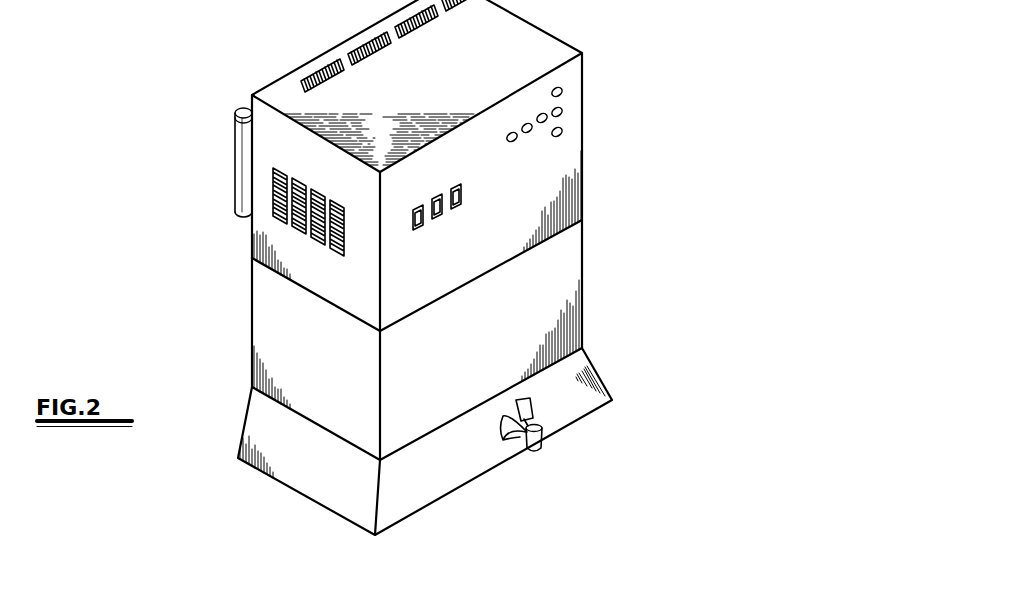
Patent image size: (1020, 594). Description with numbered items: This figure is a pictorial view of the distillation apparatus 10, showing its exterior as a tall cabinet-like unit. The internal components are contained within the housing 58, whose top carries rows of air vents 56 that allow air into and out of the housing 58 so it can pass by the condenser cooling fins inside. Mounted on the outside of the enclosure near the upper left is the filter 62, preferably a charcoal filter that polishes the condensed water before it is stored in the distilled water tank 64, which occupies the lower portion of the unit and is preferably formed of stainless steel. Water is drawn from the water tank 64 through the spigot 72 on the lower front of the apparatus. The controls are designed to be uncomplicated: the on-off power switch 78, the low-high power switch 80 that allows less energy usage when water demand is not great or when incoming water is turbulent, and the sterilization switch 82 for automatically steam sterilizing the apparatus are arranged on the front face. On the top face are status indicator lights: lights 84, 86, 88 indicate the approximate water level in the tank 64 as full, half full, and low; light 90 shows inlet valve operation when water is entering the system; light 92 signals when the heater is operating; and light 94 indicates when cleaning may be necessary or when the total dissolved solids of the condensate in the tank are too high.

The distillation apparatus 10 is at (222, 266).
The air vents 56 is at (307, 86).
The housing 58 is at (498, 27).
The filter 62 is at (240, 184).
The distilled water tank 64 is at (300, 352).
The spigot 72 is at (533, 437).
The on-off power switch 78 is at (419, 229).
The low-high power switch 80 is at (438, 218).
The sterilization switch 82 is at (457, 207).
The status indicator light 84 is at (561, 90).
The status indicator light 86 is at (561, 110).
The status indicator light 88 is at (562, 130).
The inlet valve light 90 is at (525, 124).
The heater light 92 is at (541, 113).
The cleaning/TDS light 94 is at (509, 133).